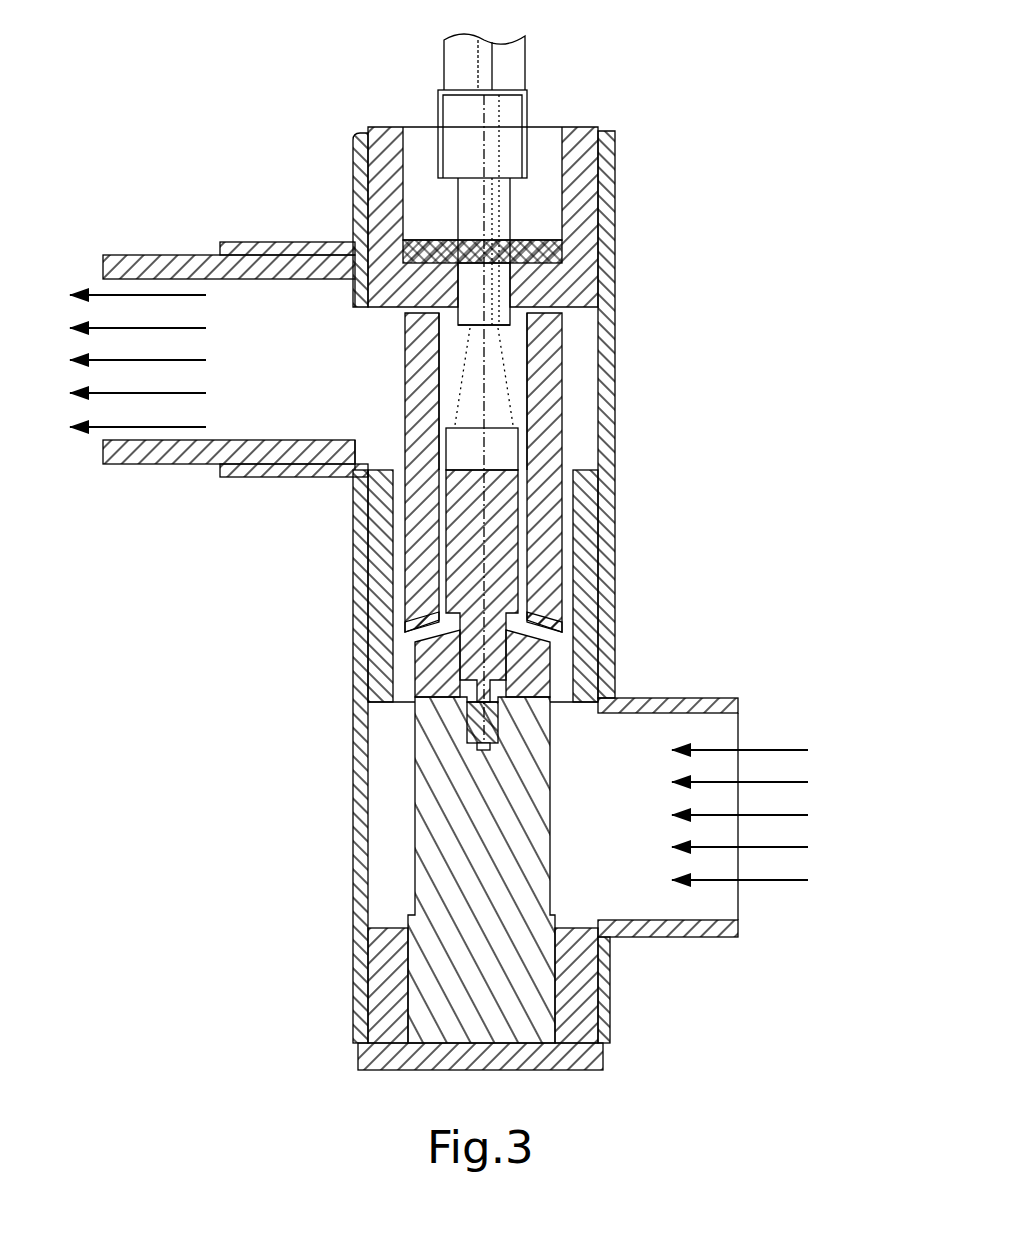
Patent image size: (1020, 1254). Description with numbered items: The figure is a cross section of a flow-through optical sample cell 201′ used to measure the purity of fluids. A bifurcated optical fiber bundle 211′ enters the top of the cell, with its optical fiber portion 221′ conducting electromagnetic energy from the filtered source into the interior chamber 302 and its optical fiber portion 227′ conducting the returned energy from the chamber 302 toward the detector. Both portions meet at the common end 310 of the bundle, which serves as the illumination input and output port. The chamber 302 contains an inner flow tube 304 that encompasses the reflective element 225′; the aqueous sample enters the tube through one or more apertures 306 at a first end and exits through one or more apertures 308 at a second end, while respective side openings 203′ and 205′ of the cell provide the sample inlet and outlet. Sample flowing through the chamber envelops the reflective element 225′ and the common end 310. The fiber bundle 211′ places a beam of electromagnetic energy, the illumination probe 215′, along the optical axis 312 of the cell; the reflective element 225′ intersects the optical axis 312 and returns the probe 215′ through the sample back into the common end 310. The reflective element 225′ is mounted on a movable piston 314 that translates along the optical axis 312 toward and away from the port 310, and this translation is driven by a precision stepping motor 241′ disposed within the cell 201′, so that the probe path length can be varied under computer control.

The optical sample cell 201′ is at (355, 647).
The side opening 203′ is at (715, 738).
The side opening 205′ is at (247, 307).
The bifurcated optical fiber bundle 211′ is at (467, 202).
The illumination probe 215′ is at (493, 415).
The optical fiber portion 221′ is at (458, 70).
The reflective element 225′ is at (496, 453).
The optical fiber portion 227′ is at (507, 72).
The precision stepping motor 241′ is at (478, 723).
The interior chamber 302 is at (447, 554).
The inner flow tube 304 is at (508, 343).
The apertures 306 is at (420, 625).
The apertures 308 is at (566, 315).
The common end 310 is at (468, 330).
The optical axis 312 is at (483, 517).
The movable piston 314 is at (467, 577).